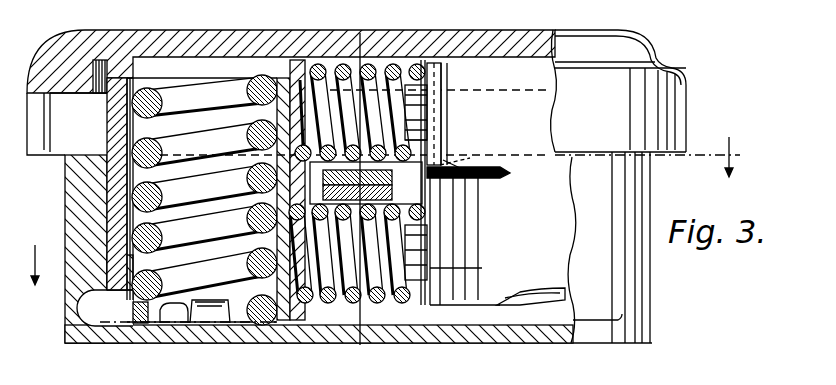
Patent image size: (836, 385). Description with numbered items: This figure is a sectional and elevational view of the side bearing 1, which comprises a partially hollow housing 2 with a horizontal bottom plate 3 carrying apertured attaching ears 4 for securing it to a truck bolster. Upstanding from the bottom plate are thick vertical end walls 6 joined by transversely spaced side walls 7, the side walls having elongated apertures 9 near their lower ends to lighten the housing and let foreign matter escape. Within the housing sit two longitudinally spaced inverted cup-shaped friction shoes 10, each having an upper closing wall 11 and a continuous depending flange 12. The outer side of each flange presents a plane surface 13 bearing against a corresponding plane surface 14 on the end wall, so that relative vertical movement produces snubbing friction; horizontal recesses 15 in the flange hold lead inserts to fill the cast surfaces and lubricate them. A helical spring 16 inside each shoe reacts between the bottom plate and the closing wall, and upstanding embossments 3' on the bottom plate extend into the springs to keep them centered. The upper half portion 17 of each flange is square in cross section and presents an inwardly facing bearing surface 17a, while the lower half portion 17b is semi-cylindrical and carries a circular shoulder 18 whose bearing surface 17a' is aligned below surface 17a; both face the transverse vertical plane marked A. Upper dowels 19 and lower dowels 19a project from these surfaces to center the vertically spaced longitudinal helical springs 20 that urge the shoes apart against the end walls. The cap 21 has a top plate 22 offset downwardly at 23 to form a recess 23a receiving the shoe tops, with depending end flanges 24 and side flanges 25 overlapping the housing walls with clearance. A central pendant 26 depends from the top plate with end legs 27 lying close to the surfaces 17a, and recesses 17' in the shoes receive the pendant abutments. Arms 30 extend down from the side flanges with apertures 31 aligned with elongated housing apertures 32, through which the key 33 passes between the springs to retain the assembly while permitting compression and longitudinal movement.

The side bearing 1 is at (650, 317).
The housing 2 is at (622, 337).
The bottom plate 3 is at (319, 349).
The upstanding embossments 3' is at (185, 337).
The attaching ears 4 is at (377, 222).
The end walls 6 is at (68, 212).
The side walls 7 is at (392, 356).
The elongated apertures 9 is at (123, 335).
The friction shoes 10 is at (110, 227).
The closing wall 11 is at (302, 62).
The depending flange 12 is at (314, 272).
The plane surface 13 is at (70, 195).
The plane surface 14 is at (107, 170).
The recesses 15 is at (107, 278).
The helical spring 16 is at (348, 202).
The upper half portion 17 is at (482, 114).
The recesses 17' is at (456, 182).
The bearing surface 17a is at (451, 112).
The bearing surface 17a' is at (477, 270).
The lower half portion 17b is at (509, 239).
The shoulder 18 is at (437, 247).
The upper dowel 19 is at (448, 130).
The lower dowel 19a is at (417, 252).
The helical springs 20 is at (378, 63).
The cap 21 is at (470, 38).
The top plate 22 is at (182, 30).
The offset portion 23 is at (60, 80).
The recess 23a is at (95, 62).
The end flanges 24 is at (695, 100).
The side flanges 25 is at (620, 91).
The pendant 26 is at (247, 200).
The end legs 27 is at (513, 100).
The arms 30 is at (480, 178).
The apertures 31 is at (390, 182).
The elongated apertures 32 is at (457, 162).
The key 33 is at (390, 193).
The transverse vertical plane A is at (355, 196).